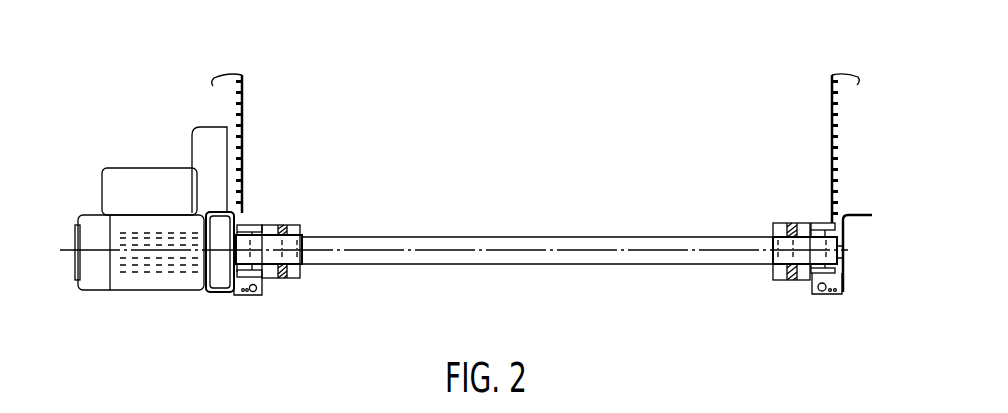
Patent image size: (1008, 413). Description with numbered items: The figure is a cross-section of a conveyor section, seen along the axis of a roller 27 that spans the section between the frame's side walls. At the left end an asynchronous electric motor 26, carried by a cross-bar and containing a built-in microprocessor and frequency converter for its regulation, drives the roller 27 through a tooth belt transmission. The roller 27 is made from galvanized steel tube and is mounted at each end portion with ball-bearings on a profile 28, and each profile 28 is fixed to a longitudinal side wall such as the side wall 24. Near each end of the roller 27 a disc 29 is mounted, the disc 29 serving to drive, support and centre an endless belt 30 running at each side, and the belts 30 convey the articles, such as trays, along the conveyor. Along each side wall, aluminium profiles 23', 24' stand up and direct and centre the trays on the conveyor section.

The aluminium profile 23' is at (257, 141).
The aluminium profile 24' is at (801, 146).
The longitudinal side wall 24 is at (533, 287).
The asynchronous electric motor 26 is at (145, 280).
The roller 27 is at (350, 257).
The profile 28 is at (250, 225).
The disc 29 is at (300, 233).
The endless belt 30 is at (285, 227).